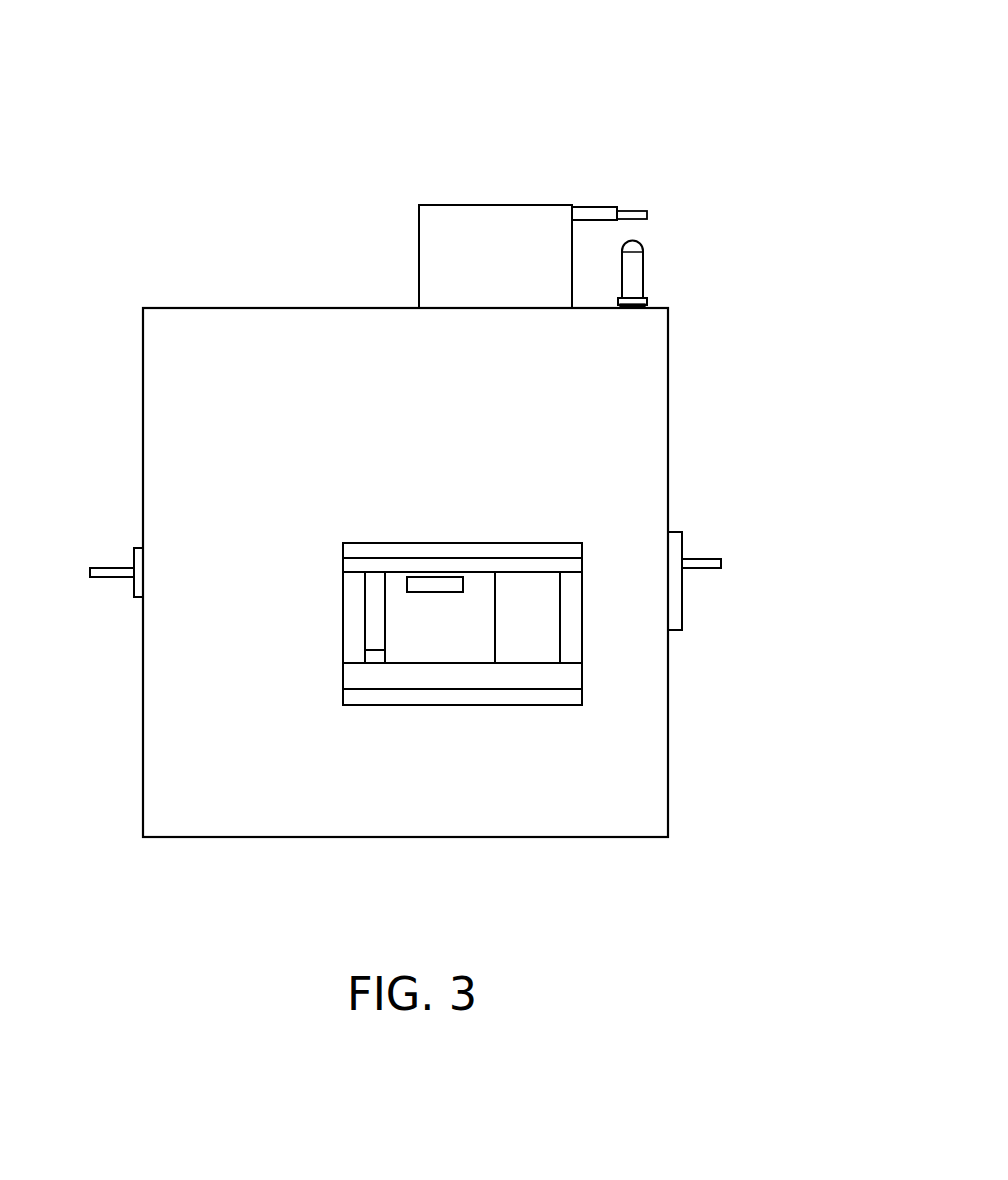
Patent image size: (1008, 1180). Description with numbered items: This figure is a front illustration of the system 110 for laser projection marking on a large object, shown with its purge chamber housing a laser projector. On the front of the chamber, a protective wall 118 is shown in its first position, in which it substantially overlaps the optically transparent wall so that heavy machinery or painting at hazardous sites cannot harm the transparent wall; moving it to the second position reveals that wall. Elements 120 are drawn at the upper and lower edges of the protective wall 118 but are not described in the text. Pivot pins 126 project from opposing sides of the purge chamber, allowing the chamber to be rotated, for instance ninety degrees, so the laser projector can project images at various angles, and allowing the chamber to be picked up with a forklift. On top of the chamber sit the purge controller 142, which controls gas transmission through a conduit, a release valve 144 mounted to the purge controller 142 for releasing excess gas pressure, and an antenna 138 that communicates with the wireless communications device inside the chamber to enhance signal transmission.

The system 110 is at (440, 434).
The protective wall 118 is at (402, 663).
The rails 120 is at (475, 558).
The pivot pin 126 is at (90, 578).
The antenna 138 is at (645, 251).
The purge controller 142 is at (513, 205).
The release valve 144 is at (615, 206).